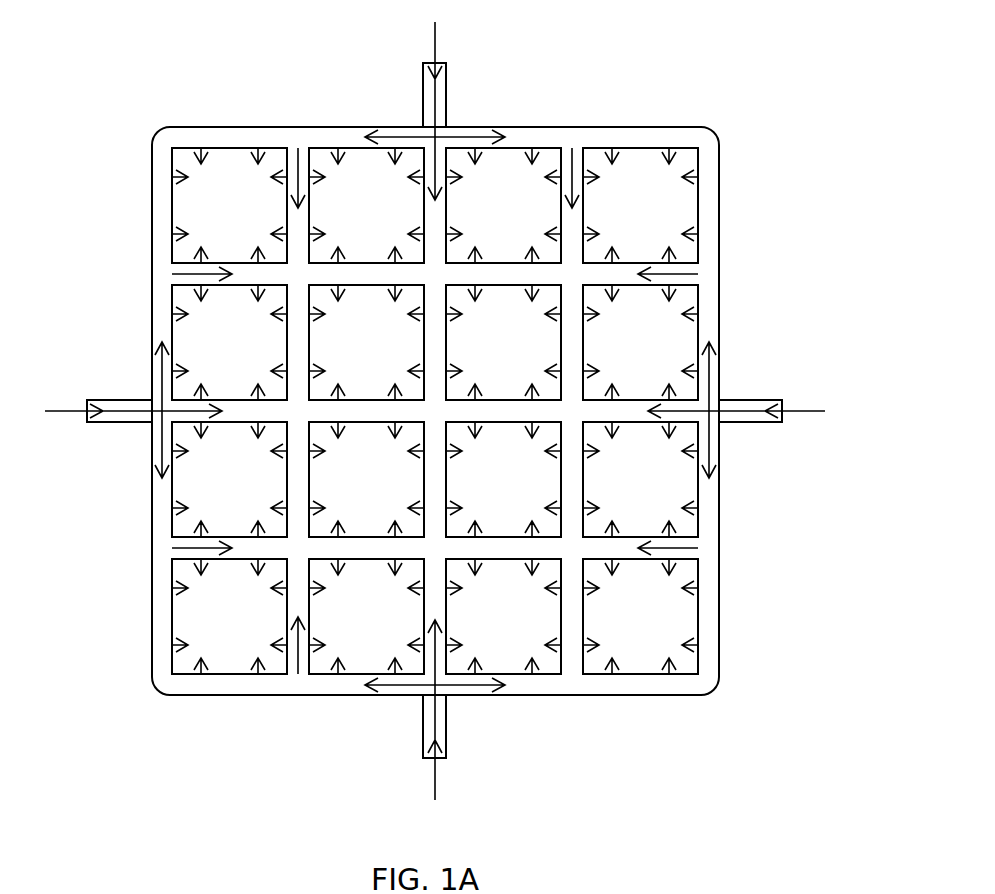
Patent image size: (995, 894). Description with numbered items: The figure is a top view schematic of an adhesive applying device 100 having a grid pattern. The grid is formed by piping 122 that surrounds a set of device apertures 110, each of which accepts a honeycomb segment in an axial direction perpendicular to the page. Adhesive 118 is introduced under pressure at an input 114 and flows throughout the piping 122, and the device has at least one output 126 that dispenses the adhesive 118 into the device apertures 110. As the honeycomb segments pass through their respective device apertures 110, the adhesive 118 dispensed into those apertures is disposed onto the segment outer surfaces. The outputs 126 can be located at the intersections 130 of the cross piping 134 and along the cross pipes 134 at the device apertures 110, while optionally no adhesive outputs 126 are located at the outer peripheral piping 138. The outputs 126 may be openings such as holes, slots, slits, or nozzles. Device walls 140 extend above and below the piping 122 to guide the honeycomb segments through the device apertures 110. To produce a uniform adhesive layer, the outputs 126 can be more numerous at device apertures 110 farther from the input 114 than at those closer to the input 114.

The adhesive applying device 100 is at (128, 66).
The device apertures 110 is at (435, 411).
The input 114 is at (446, 96).
The adhesive 118 is at (436, 33).
The piping 122 is at (625, 135).
The output 126 is at (282, 170).
The intersections 130 is at (436, 411).
The cross piping 134 is at (300, 360).
The outer peripheral piping 138 is at (533, 135).
The device walls 140 is at (162, 172).